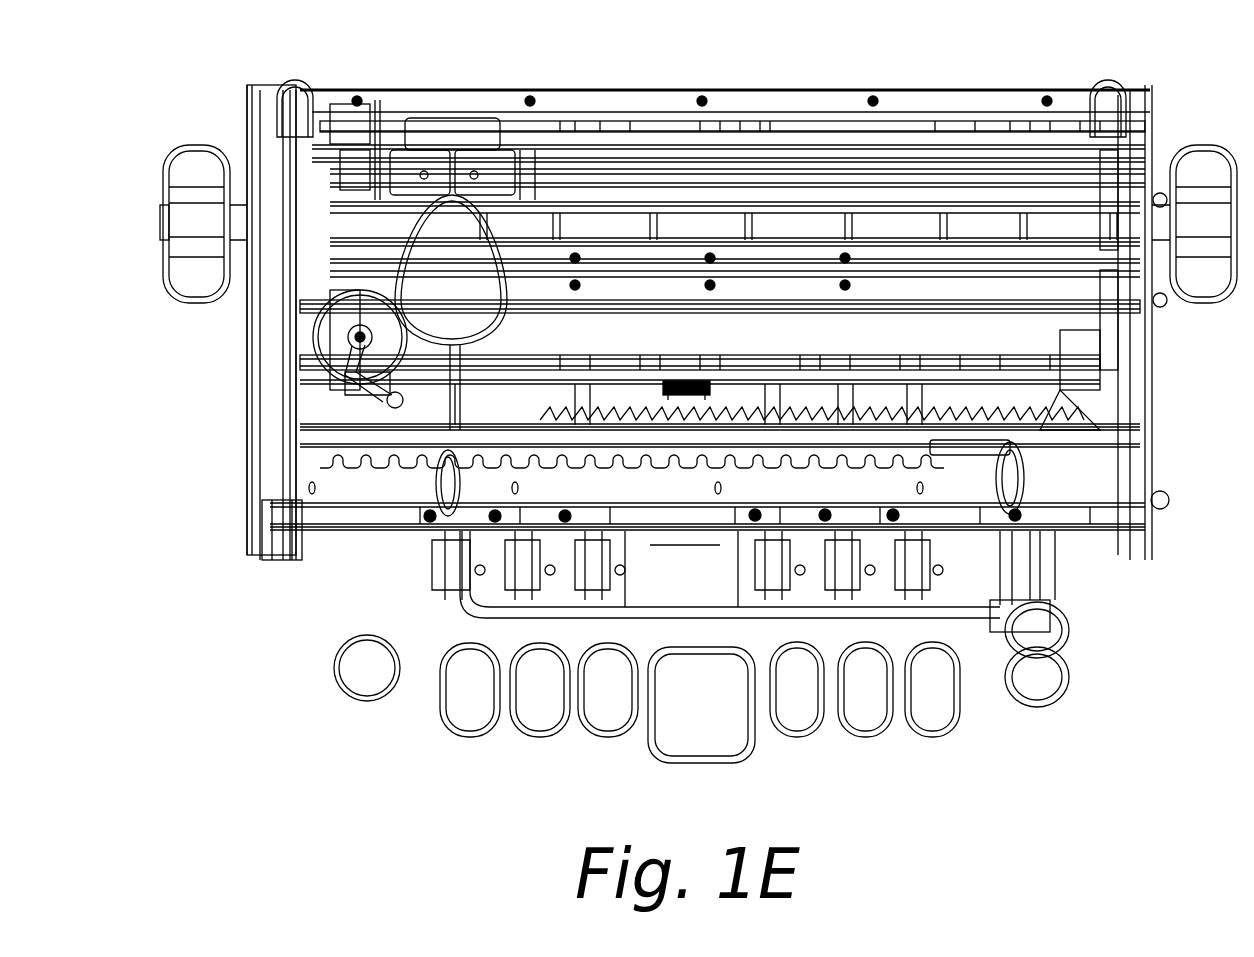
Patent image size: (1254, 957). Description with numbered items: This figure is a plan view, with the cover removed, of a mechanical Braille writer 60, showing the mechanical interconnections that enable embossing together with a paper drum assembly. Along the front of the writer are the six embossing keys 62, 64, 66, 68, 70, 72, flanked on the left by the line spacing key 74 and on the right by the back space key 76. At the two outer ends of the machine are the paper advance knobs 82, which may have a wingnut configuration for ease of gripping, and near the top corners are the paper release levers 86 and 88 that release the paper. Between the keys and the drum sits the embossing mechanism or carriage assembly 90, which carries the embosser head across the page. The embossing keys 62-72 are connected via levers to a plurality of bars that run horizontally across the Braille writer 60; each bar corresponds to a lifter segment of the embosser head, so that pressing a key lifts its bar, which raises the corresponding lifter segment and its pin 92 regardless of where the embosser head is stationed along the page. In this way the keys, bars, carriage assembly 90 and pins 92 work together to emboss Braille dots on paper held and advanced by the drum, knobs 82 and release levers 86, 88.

The mechanical Braille writer 60 is at (724, 72).
The embossing key 62 is at (440, 595).
The embossing key 64 is at (510, 595).
The embossing key 66 is at (580, 595).
The embossing key 68 is at (770, 595).
The embossing key 70 is at (840, 595).
The embossing key 72 is at (908, 595).
The line spacing key 74 is at (300, 534).
The back space key 76 is at (1037, 654).
The paper advance knob 82 is at (193, 144).
The paper release lever 86 is at (295, 78).
The paper release lever 88 is at (1107, 78).
The carriage assembly 90 is at (451, 270).
The pin 92 is at (700, 565).